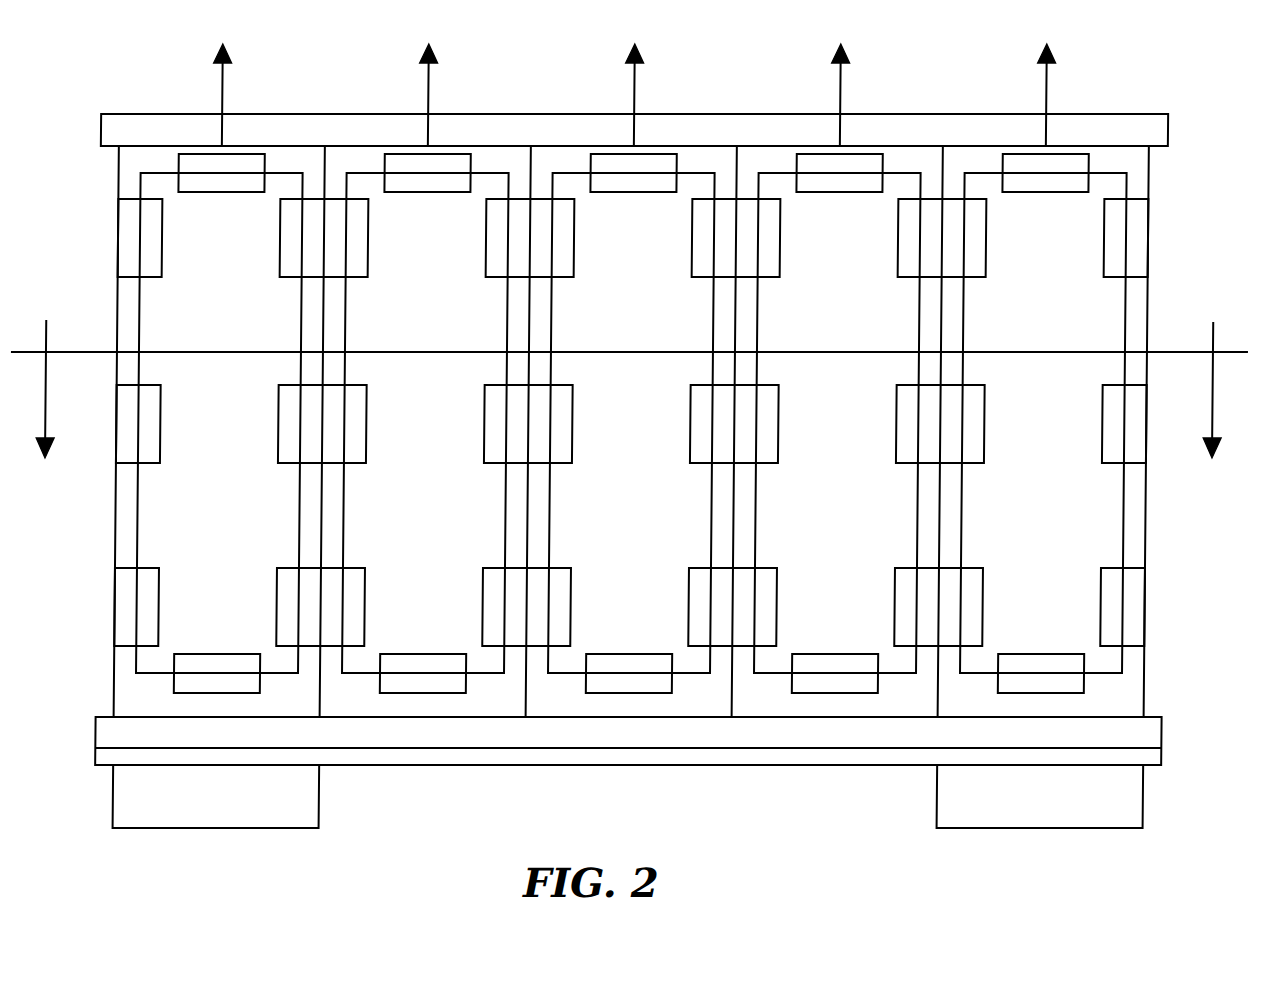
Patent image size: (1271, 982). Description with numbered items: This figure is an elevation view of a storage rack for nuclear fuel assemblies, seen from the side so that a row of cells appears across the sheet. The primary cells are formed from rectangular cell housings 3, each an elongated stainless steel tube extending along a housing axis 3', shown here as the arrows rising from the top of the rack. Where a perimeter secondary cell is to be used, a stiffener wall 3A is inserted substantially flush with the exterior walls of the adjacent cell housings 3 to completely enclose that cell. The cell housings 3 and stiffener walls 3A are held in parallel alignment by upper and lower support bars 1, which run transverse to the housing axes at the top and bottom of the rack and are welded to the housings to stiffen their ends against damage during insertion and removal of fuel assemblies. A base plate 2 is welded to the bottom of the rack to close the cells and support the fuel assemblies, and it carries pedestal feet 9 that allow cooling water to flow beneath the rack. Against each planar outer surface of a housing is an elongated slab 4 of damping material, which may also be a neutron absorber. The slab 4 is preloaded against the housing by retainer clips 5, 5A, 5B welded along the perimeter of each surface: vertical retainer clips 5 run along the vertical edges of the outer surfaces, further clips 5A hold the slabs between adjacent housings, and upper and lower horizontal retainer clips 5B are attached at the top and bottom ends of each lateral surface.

The upper and lower support bar 1 is at (118, 131).
The base plate 2 is at (678, 757).
The cell housing 3 is at (631, 443).
The stiffener wall 3A is at (473, 711).
The housing axis 3' is at (679, 90).
The elongated slab 4 is at (208, 436).
The vertical retainer clip 5 is at (152, 250).
The retainer clip 5A is at (358, 250).
The horizontal retainer clip 5B is at (630, 183).
The pedestal foot 9 is at (283, 790).